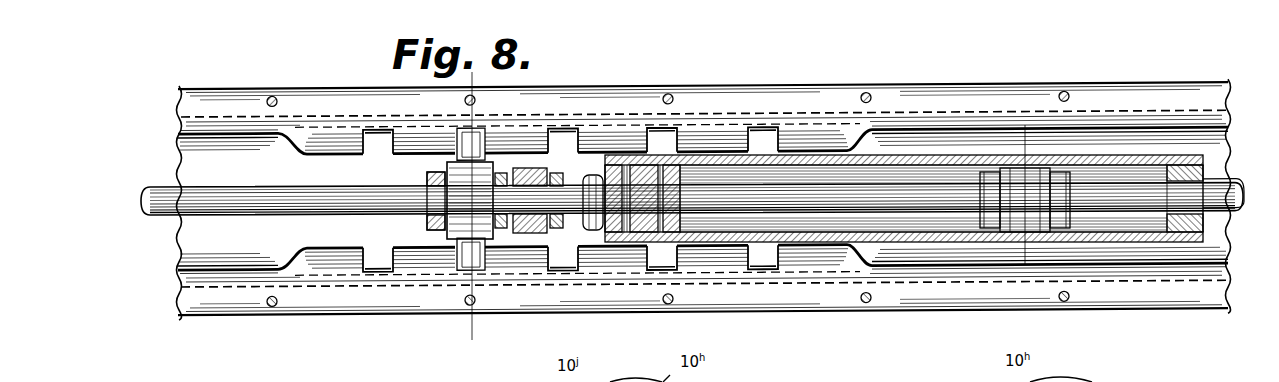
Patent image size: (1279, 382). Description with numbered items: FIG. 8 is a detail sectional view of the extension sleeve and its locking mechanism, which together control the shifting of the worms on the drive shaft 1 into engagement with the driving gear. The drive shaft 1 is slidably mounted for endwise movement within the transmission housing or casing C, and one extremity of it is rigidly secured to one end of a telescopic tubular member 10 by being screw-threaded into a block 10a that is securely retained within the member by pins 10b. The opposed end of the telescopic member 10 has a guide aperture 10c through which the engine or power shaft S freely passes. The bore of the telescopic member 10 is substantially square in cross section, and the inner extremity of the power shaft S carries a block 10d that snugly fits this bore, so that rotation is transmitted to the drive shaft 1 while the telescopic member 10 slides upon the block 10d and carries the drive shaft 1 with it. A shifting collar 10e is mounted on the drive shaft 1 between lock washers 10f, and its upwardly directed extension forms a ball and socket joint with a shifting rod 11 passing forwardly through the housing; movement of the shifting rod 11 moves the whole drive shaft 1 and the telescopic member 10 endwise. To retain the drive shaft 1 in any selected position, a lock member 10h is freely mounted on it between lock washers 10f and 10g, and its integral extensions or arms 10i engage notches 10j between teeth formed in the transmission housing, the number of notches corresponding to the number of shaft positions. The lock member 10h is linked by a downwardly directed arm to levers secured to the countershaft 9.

The drive shaft 1 is at (167, 218).
The countershaft 9 is at (500, 325).
The telescopic tubular member 10 is at (923, 242).
The block 10a is at (683, 218).
The pins 10b is at (683, 192).
The guide aperture 10c is at (1203, 168).
The block 10d is at (1035, 185).
The shifting collar 10e is at (528, 234).
The lock washers 10f is at (563, 173).
The lock washer 10g is at (428, 225).
The lock member 10h is at (453, 238).
The extensions or arms 10i is at (450, 153).
The notches 10j is at (390, 131).
The shifting rod 11 is at (1048, 255).
The transmission housing or casing C is at (708, 86).
The engine or power shaft S is at (1233, 208).